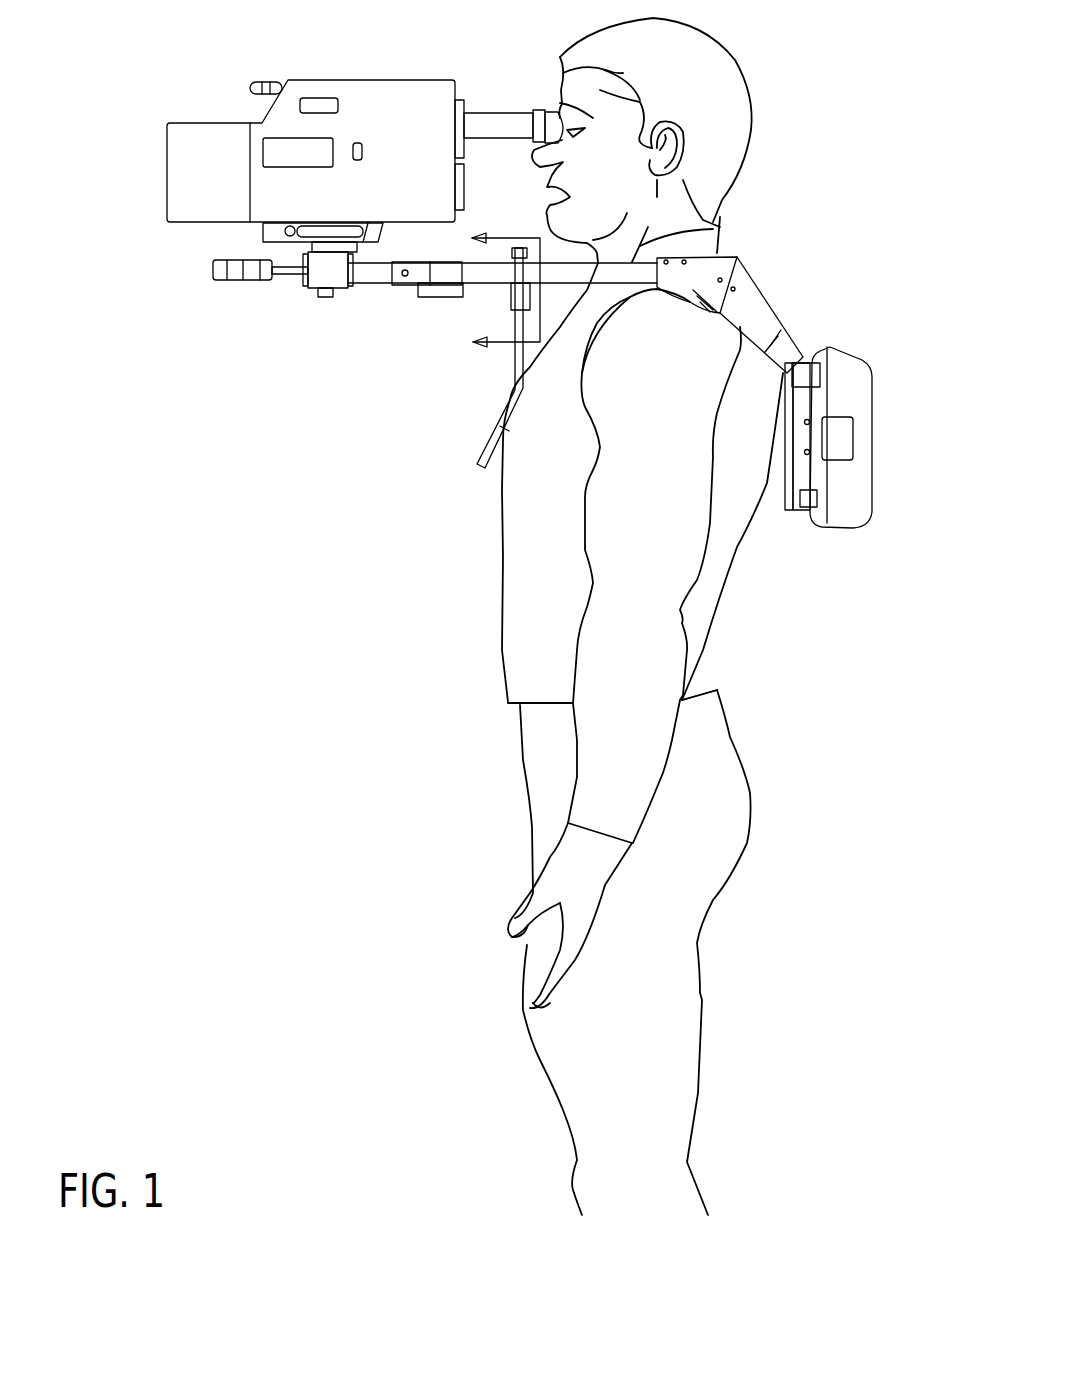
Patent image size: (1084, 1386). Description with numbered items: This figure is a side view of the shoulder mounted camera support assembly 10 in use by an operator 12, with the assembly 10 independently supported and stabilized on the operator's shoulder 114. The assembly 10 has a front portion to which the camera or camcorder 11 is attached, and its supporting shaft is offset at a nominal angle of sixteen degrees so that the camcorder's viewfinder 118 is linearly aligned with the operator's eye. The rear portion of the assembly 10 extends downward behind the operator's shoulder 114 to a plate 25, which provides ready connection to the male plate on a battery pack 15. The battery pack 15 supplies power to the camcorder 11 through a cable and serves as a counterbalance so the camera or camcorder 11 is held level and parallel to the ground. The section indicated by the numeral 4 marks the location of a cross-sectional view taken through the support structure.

The shoulder mounted camera support assembly 10 is at (433, 324).
The camera or camcorder 11 is at (313, 80).
The viewfinder 118 is at (492, 115).
The operator's shoulder 114 is at (713, 227).
The plate 25 is at (822, 353).
The battery pack 15 is at (828, 347).
The operator 12 is at (512, 554).
The section line 4- 4 is at (495, 289).